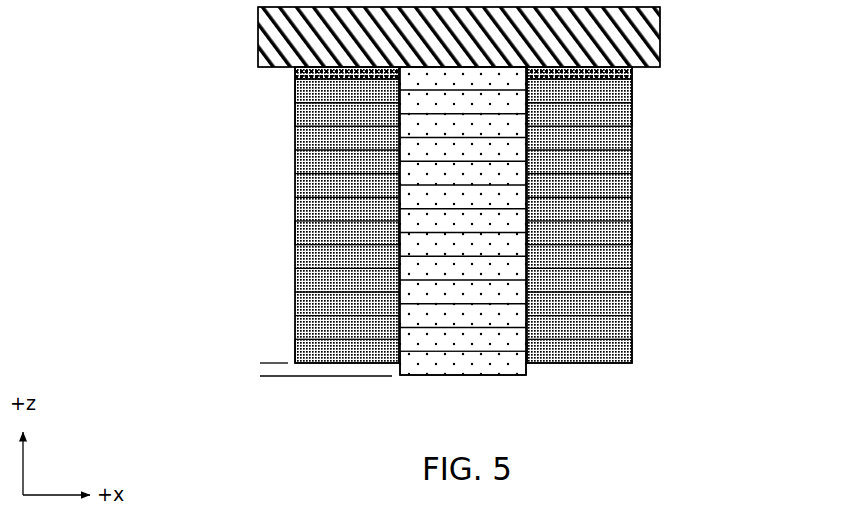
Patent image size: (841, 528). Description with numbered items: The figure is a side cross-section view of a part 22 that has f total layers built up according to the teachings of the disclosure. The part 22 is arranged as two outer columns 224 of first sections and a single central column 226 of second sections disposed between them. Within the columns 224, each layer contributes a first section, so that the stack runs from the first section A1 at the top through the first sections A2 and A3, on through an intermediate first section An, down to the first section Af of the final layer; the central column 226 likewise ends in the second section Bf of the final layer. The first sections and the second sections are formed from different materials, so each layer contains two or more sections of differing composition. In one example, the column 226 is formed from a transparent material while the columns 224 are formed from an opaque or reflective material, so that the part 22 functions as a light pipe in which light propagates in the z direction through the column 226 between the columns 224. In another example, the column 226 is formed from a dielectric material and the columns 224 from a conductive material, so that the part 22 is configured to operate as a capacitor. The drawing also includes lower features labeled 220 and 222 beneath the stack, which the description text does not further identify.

The part 22 is at (116, 184).
The bottom electrode 220 is at (380, 404).
The spacer layer 222 is at (263, 369).
The columns 224 is at (275, 158).
The column 226 is at (495, 390).
The first section A1 is at (287, 72).
The first section A2 is at (287, 89).
The first section A3 is at (287, 114).
The first section An is at (287, 231).
The first section Af is at (287, 352).
The second section Bf is at (458, 366).